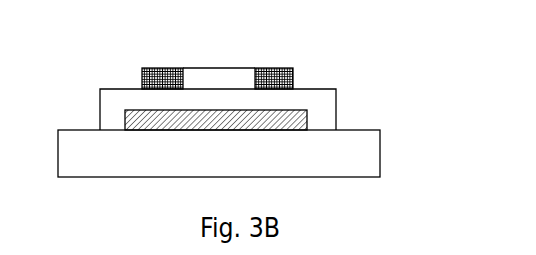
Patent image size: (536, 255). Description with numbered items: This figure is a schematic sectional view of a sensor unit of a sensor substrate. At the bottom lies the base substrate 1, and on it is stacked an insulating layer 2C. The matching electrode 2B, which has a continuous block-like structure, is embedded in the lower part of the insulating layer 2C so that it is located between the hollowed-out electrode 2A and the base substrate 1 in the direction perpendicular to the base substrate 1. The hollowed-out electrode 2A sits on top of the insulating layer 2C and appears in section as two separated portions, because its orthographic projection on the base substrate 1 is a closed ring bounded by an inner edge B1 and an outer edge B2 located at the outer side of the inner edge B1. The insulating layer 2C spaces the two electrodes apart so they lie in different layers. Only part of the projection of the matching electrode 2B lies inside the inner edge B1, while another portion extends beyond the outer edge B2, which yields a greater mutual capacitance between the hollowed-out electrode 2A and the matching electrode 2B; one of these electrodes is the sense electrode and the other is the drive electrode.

The base substrate 1 is at (355, 152).
The hollowed-out electrode 2A is at (153, 82).
The matching electrode 2B is at (142, 122).
The insulating layer 2C is at (323, 102).
The inner edge B1 is at (255, 68).
The outer edge B2 is at (295, 90).